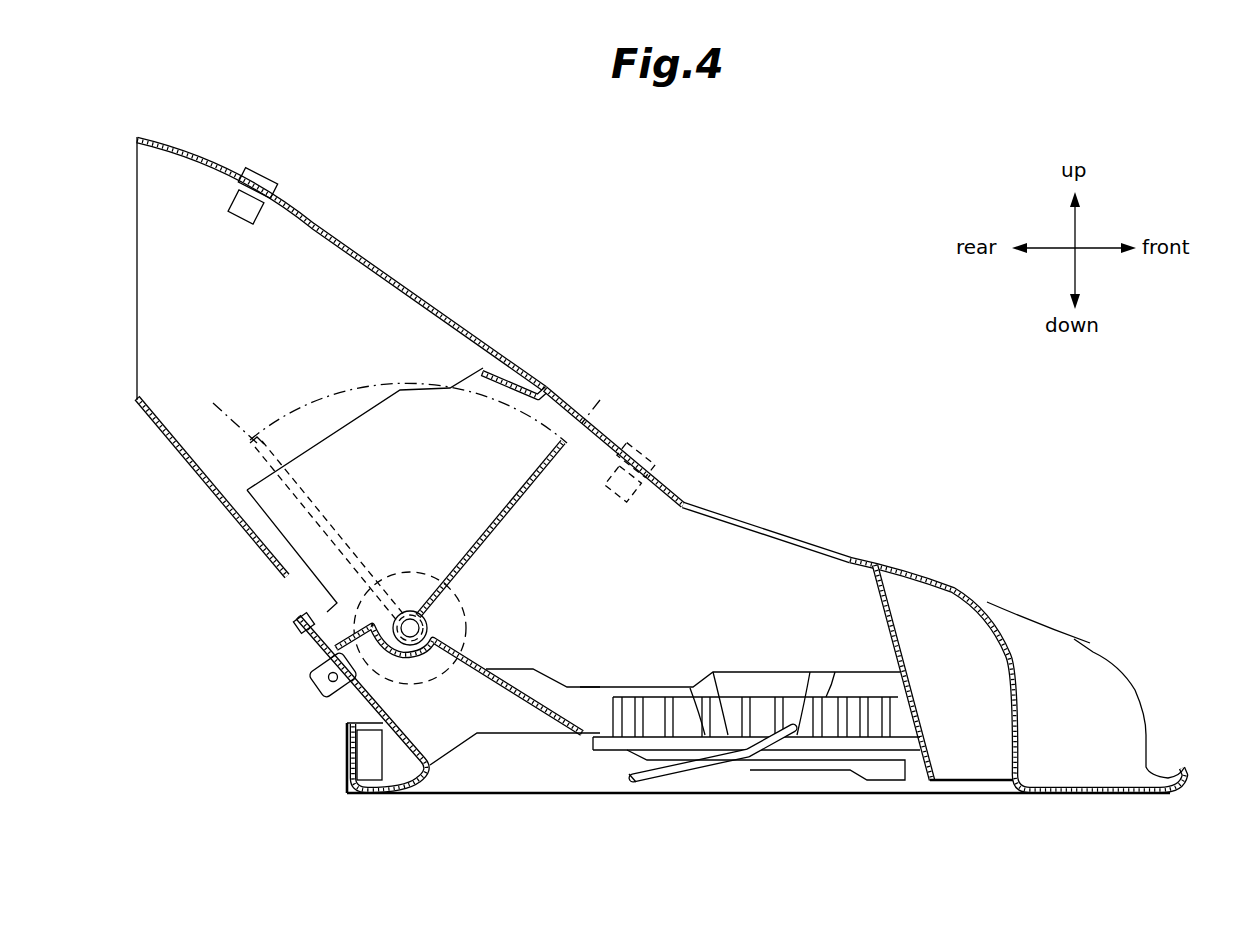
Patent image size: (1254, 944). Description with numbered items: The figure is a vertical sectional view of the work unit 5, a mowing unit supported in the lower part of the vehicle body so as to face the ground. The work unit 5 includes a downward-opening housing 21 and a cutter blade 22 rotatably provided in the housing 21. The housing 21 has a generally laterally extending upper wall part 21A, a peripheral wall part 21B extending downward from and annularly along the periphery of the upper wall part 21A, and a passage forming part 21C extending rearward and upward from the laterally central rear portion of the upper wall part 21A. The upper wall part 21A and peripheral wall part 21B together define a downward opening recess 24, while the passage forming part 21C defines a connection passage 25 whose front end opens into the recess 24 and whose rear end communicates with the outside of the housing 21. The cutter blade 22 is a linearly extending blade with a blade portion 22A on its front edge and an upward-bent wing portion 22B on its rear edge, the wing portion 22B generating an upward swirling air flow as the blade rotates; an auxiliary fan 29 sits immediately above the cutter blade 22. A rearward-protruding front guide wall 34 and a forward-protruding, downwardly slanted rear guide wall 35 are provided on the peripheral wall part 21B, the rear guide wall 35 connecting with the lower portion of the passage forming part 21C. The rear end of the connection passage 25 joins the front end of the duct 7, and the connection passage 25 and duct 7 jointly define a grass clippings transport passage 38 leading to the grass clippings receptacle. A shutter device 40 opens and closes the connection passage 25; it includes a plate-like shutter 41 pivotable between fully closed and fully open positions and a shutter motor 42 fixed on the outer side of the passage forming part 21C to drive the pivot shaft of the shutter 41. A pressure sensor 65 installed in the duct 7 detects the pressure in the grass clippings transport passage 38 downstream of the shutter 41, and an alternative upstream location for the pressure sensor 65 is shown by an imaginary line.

The work unit 5 is at (940, 452).
The duct 7 is at (315, 222).
The housing 21 is at (724, 490).
The upper wall part 21A is at (787, 528).
The peripheral wall part 21B is at (1005, 745).
The passage forming part 21C is at (547, 400).
The cutter blade 22 is at (664, 793).
The blade portion 22A is at (635, 776).
The wing portion 22B is at (787, 762).
The recess 24 is at (740, 527).
The connection passage 25 is at (511, 393).
The auxiliary fan 29 is at (653, 703).
The front guide wall 34 is at (923, 762).
The rear guide wall 35 is at (530, 700).
The grass clippings transport passage 38 is at (397, 292).
The shutter device 40 is at (487, 562).
The shutter 41 is at (523, 500).
The shutter motor 42 is at (415, 567).
The pressure sensor 65 is at (263, 180).